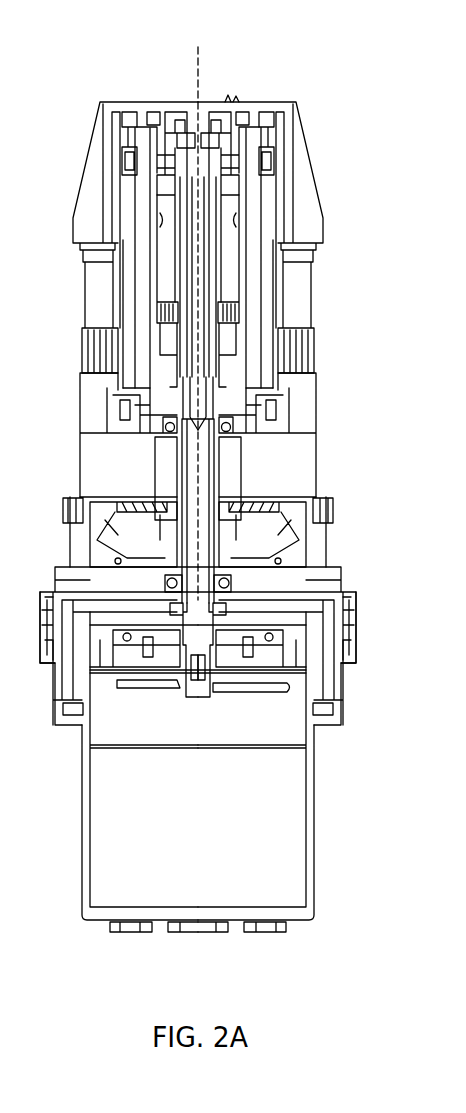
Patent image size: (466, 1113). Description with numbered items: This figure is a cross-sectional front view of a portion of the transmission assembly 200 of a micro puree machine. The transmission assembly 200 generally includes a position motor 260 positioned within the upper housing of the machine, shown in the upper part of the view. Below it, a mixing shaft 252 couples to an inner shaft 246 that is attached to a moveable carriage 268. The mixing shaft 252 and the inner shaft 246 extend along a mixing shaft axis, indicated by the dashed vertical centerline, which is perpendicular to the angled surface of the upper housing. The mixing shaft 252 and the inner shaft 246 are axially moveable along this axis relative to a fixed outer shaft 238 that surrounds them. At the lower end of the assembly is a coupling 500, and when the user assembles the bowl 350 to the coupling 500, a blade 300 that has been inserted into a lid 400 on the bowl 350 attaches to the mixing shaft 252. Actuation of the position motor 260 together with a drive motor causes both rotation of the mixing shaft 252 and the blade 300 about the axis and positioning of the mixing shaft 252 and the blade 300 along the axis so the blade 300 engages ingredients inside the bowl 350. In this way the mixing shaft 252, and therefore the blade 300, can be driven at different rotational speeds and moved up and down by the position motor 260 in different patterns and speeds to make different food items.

The transmission assembly 200 is at (242, 477).
The moveable carriage 268 is at (228, 150).
The position motor 260 is at (227, 257).
The inner shaft 246 is at (202, 340).
The fixed outer shaft 238 is at (177, 478).
The mixing shaft 252 is at (202, 555).
The coupling 500 is at (353, 602).
The lid 400 is at (298, 660).
The blade 300 is at (277, 697).
The bowl 350 is at (287, 832).